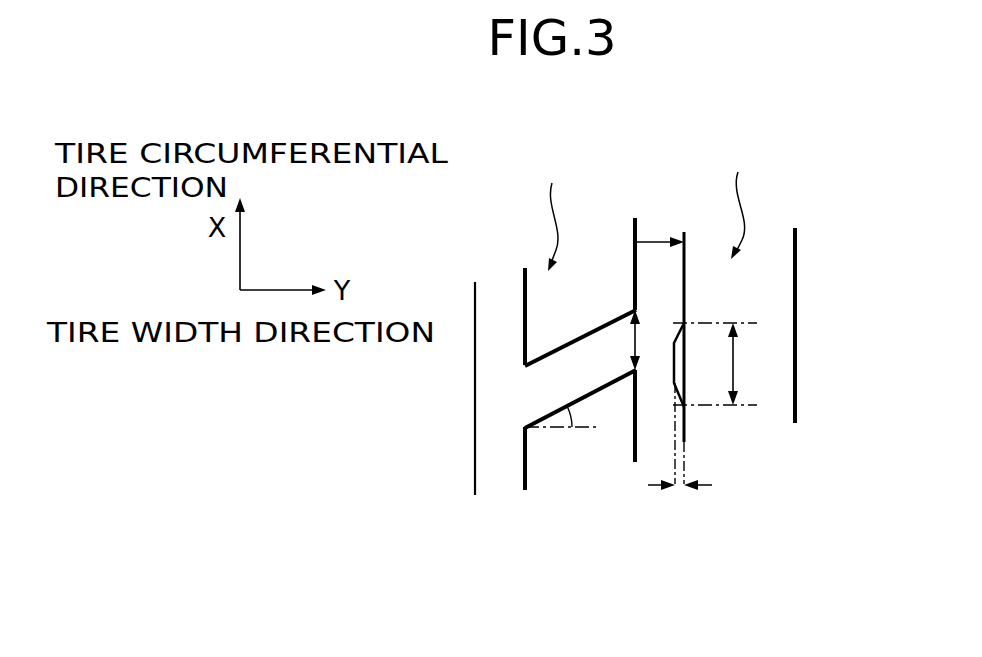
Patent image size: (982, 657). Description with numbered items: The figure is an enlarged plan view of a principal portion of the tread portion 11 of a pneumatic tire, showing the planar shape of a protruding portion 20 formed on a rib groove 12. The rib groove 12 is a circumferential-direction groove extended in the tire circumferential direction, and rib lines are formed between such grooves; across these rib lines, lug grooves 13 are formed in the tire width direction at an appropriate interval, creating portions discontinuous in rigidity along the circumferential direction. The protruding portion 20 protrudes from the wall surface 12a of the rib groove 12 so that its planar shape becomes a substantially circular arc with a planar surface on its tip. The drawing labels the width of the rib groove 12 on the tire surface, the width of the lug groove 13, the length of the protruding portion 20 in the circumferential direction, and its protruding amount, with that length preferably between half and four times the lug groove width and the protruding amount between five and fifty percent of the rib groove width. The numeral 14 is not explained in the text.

The tread portion 11 is at (770, 210).
The rib groove 12 is at (497, 290).
The wall surface 12a is at (478, 425).
The lug groove 13 is at (550, 383).
The block 14 is at (603, 290).
The protruding portion 20 is at (672, 385).